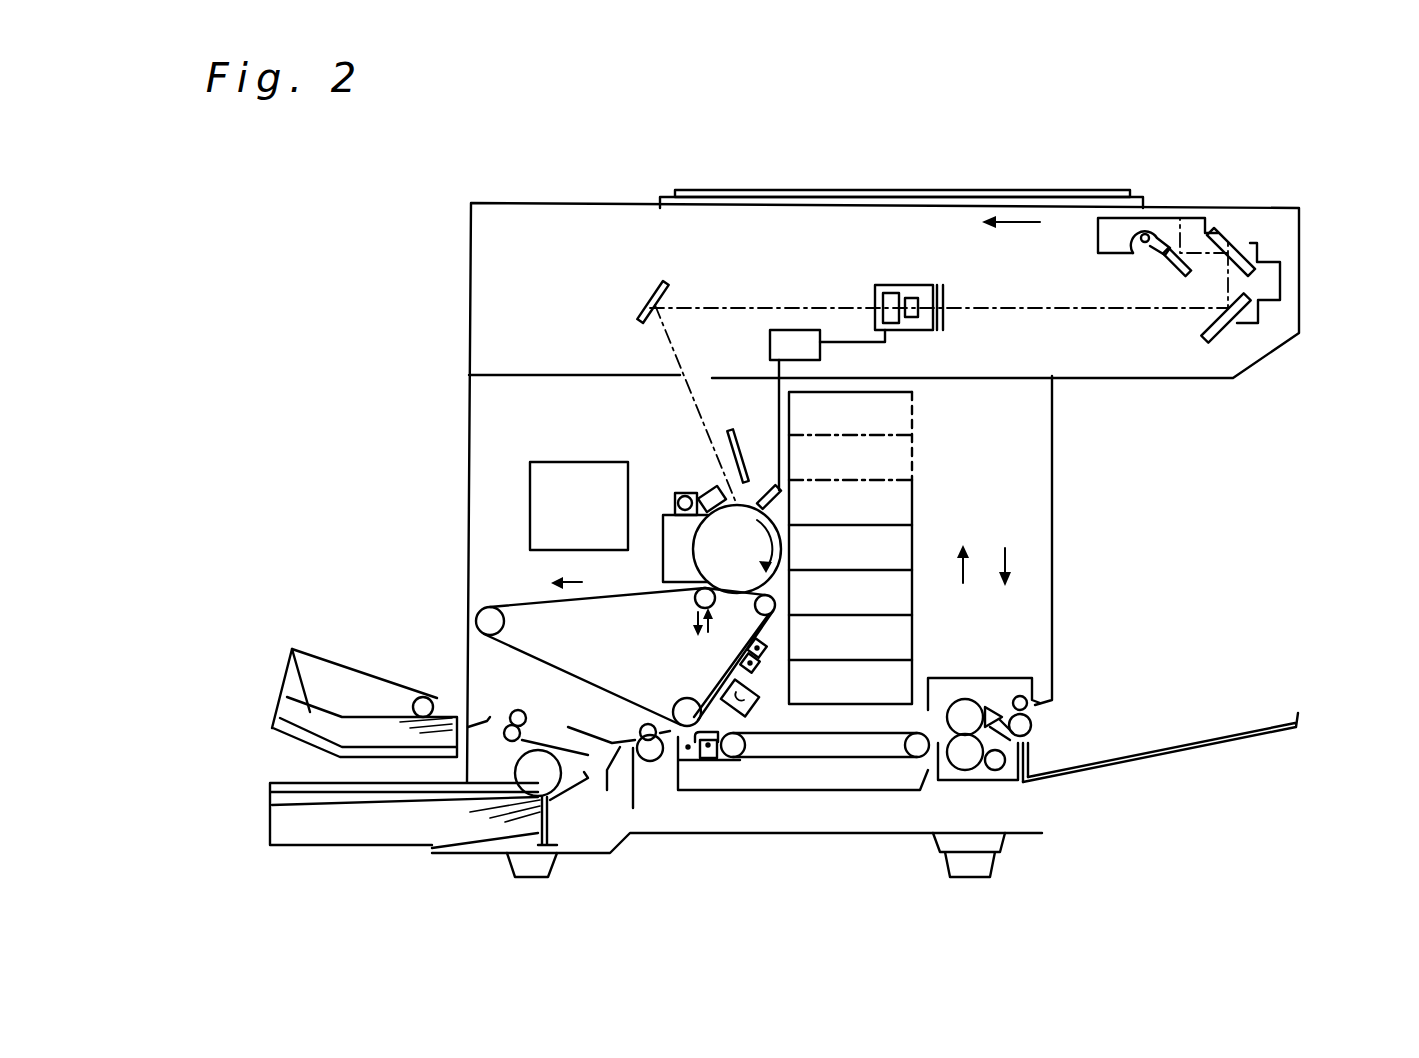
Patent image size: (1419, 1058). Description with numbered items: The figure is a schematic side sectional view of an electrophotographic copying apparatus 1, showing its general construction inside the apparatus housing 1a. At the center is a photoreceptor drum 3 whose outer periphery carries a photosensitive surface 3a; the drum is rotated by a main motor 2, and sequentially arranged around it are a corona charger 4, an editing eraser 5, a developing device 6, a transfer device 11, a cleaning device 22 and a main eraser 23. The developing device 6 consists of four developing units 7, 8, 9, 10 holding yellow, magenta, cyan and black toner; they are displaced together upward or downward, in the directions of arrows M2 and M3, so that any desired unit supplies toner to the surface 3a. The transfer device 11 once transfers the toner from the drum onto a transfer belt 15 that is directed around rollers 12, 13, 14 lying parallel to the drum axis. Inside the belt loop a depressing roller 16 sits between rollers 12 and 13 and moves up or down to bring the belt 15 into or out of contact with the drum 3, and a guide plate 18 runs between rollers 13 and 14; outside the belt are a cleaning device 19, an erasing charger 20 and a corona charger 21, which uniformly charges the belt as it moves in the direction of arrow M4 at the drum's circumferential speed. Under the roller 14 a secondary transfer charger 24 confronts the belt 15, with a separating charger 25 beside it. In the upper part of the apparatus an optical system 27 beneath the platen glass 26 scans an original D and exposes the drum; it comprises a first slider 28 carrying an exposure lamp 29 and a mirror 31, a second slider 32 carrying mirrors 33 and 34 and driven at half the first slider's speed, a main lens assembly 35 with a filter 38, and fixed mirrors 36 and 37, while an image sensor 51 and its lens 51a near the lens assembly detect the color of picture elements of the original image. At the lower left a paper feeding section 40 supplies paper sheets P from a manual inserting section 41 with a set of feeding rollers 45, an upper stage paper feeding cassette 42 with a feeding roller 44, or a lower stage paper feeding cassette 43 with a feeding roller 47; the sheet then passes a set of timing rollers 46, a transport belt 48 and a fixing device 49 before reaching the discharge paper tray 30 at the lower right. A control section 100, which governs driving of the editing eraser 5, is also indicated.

The electrophotographic copying apparatus 1 is at (488, 198).
The apparatus housing 1a is at (1052, 518).
The main motor 2 is at (540, 500).
The photoreceptor drum 3 is at (718, 550).
The photosensitive surface 3a is at (768, 514).
The corona charger 4 is at (710, 492).
The editing eraser 5 is at (773, 487).
The developing device 6 is at (920, 517).
The developing unit 7 is at (912, 545).
The developing unit 8 is at (912, 582).
The developing unit 9 is at (907, 637).
The developing unit 10 is at (907, 675).
The transfer device 11 is at (500, 606).
The roller 12 is at (494, 620).
The roller 13 is at (757, 618).
The roller 14 is at (672, 700).
The transfer belt 15 is at (503, 718).
The depressing roller 16 is at (694, 603).
The guide plate 18 is at (744, 668).
The cleaning device 19 is at (726, 745).
The erasing charger 20 is at (748, 706).
The corona charger 21 is at (768, 666).
The cleaning device 22 is at (663, 547).
The main eraser 23 is at (675, 492).
The secondary transfer charger 24 is at (687, 763).
The separating charger 25 is at (713, 762).
The platen glass 26 is at (1022, 197).
The optical system 27 is at (1014, 284).
The first slider 28 is at (1113, 218).
The exposure lamp 29 is at (1148, 236).
The discharge paper tray 30 is at (1163, 747).
The mirror 31 is at (1178, 280).
The second slider 32 is at (1282, 278).
The mirror 33 is at (1285, 245).
The mirror 34 is at (1257, 315).
The main lens assembly 35 is at (888, 285).
The fixed mirror 36 is at (665, 282).
The fixed mirror 37 is at (733, 430).
The filter 38 is at (940, 285).
The paper feeding section 40 is at (268, 697).
The manual inserting section 41 is at (412, 700).
The upper stage paper feeding cassette 42 is at (280, 733).
The lower stage paper feeding cassette 43 is at (285, 848).
The feeding roller 44 is at (310, 712).
The feeding rollers 45 is at (518, 711).
The timing rollers 46 is at (648, 762).
The feeding roller 47 is at (547, 773).
The transport belt 48 is at (895, 762).
The fixing device 49 is at (1007, 685).
The image sensor 51 is at (892, 323).
The lens 51a is at (918, 318).
The control section 100 is at (772, 345).
The original D is at (778, 190).
The paper sheet P is at (310, 708).
The arrow indicating upward displacement direction M2 is at (955, 581).
The arrow indicating downward displacement direction M3 is at (1017, 583).
The arrow indicating belt moving direction M4 is at (538, 580).